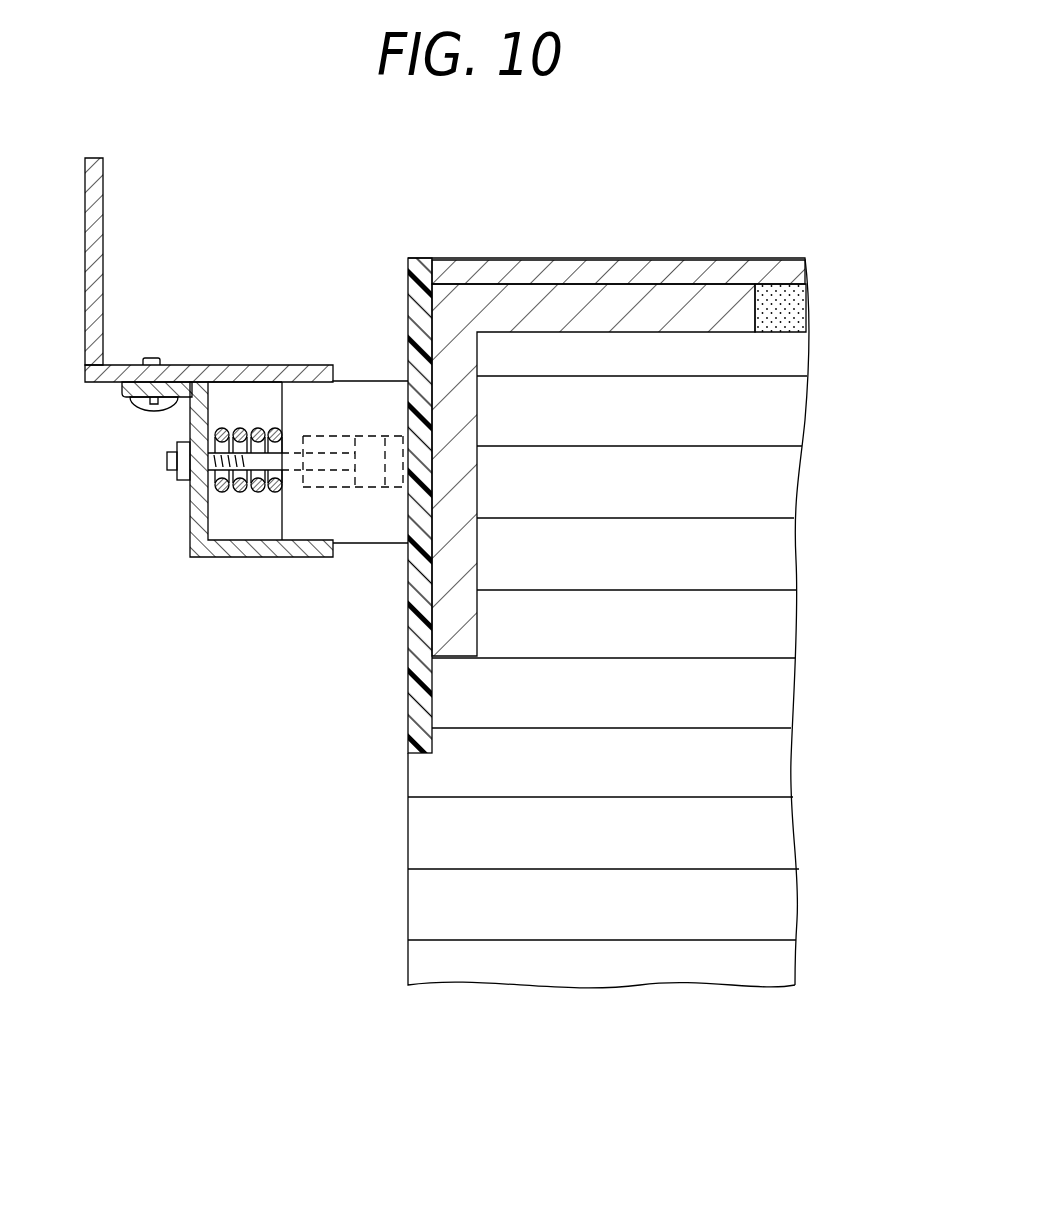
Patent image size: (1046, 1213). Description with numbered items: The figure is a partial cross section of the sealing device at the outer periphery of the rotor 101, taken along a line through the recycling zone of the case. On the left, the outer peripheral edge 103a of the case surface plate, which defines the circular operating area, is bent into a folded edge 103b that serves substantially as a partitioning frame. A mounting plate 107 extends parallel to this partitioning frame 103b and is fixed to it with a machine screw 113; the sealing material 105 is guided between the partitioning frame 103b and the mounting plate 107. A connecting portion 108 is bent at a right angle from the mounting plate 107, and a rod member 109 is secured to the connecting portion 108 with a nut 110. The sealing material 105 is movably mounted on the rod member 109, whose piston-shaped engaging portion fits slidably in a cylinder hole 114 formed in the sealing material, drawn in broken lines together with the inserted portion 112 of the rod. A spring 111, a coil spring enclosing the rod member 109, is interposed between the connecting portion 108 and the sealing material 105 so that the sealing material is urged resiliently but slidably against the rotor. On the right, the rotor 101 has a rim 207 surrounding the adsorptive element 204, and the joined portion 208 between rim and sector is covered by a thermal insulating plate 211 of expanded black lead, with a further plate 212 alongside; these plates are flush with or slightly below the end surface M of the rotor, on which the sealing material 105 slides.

The outer peripheral edge 103a is at (105, 225).
The folded edge (partitioning frame) 103b is at (250, 365).
The sealing material 105 is at (365, 408).
The mounting plate 107 is at (197, 562).
The connecting portion 108 is at (192, 530).
The rod member 109 is at (262, 495).
The nut 110 is at (172, 478).
The spring 111 is at (243, 495).
The pin shaft 112 is at (397, 465).
The machine screw 113 is at (128, 406).
The cylinder hole 114 is at (368, 476).
The rotor 101 is at (818, 472).
The adsorptive element 204 is at (765, 632).
The rim 207 is at (578, 266).
The joined portion 208 is at (790, 310).
The thermal insulating plate 211 is at (418, 723).
The liner 212 is at (441, 633).
The end surface of the rotor M is at (378, 797).